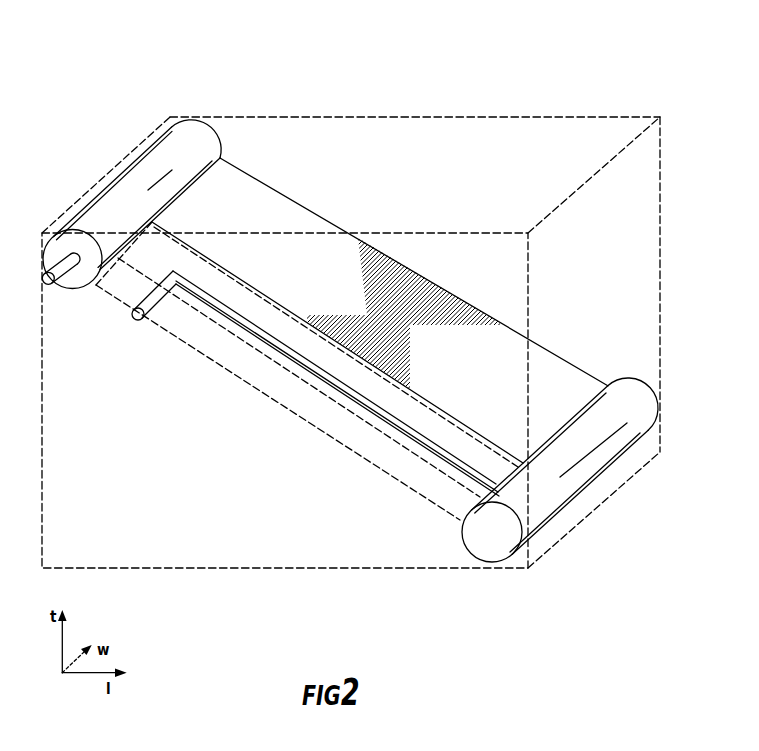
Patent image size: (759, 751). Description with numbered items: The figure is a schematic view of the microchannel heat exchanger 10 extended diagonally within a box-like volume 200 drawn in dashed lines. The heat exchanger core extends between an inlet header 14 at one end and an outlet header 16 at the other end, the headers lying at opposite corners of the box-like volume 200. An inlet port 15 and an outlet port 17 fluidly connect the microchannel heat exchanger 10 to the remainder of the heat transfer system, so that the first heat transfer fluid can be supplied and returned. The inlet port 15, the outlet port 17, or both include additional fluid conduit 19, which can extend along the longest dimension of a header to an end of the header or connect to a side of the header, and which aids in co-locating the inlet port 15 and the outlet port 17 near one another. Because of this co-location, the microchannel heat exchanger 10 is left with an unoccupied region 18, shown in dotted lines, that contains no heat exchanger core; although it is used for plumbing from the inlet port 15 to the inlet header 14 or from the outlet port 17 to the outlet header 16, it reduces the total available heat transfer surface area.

The microchannel heat exchanger 10 is at (110, 93).
The box-like volume 200 is at (383, 117).
The inlet header 14 is at (100, 195).
The inlet port 15 is at (44, 276).
The fluid conduit 19 is at (50, 258).
The outlet port 17 is at (134, 318).
The unoccupied region 18 is at (298, 417).
The outlet header 16 is at (597, 476).